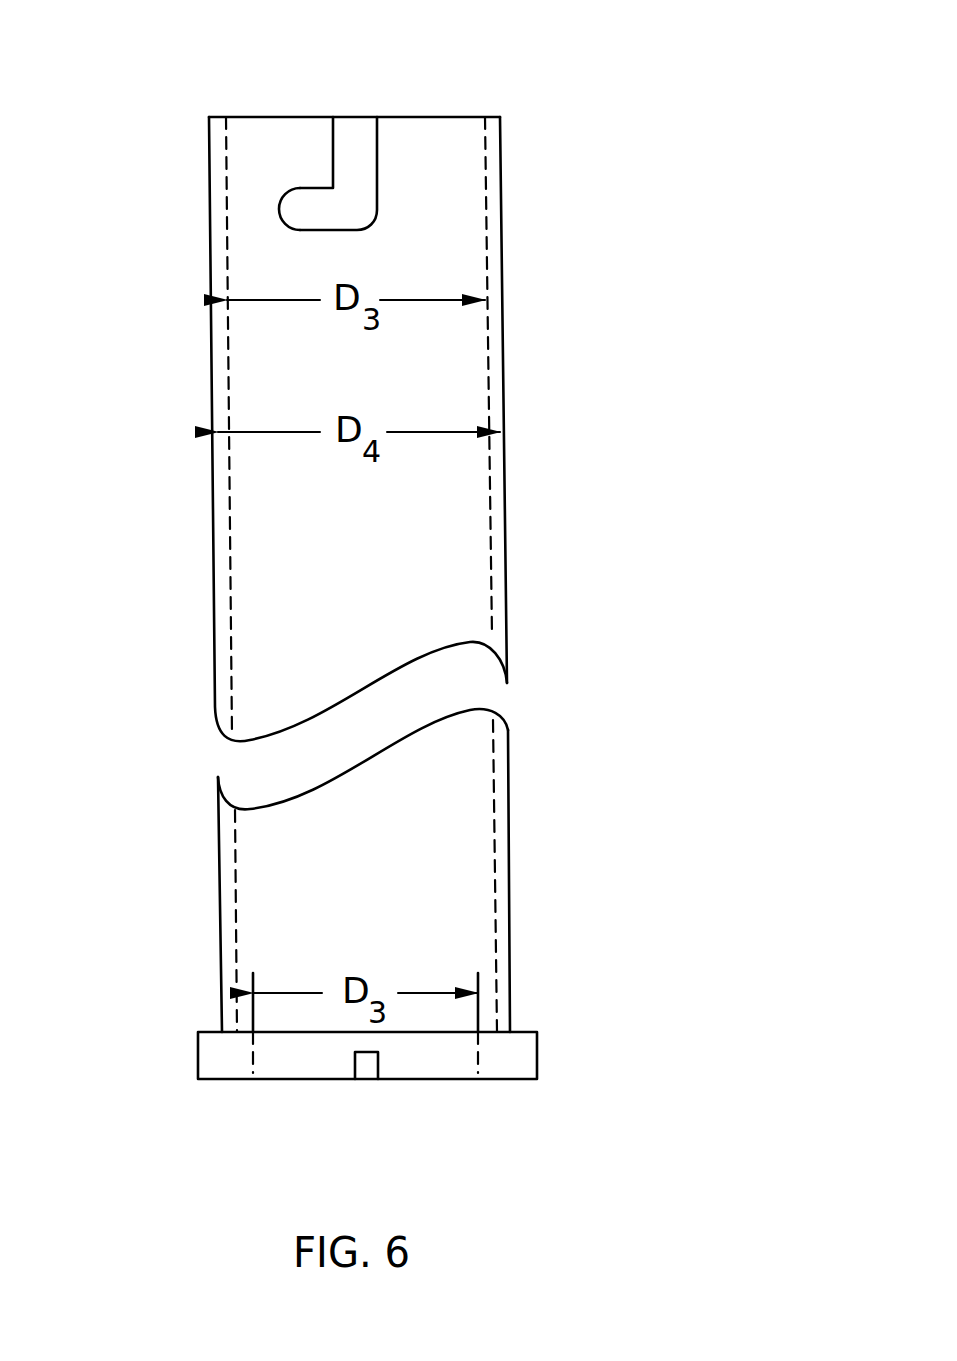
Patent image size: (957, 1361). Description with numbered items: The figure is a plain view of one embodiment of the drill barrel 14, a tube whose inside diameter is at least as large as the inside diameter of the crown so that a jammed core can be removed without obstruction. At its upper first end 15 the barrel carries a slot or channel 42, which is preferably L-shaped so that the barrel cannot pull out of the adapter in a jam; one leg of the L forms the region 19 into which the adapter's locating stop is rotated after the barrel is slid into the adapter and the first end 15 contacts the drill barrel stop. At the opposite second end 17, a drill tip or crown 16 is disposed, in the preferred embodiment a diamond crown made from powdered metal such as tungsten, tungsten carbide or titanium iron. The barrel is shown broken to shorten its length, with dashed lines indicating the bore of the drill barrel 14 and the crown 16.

The drill barrel 14 is at (600, 462).
The first end 15 is at (502, 152).
The drill tip or crown 16 is at (425, 1079).
The second end 17 is at (560, 965).
The region of the L-shaped slot 19 is at (297, 212).
The slot or channel 42 is at (378, 172).